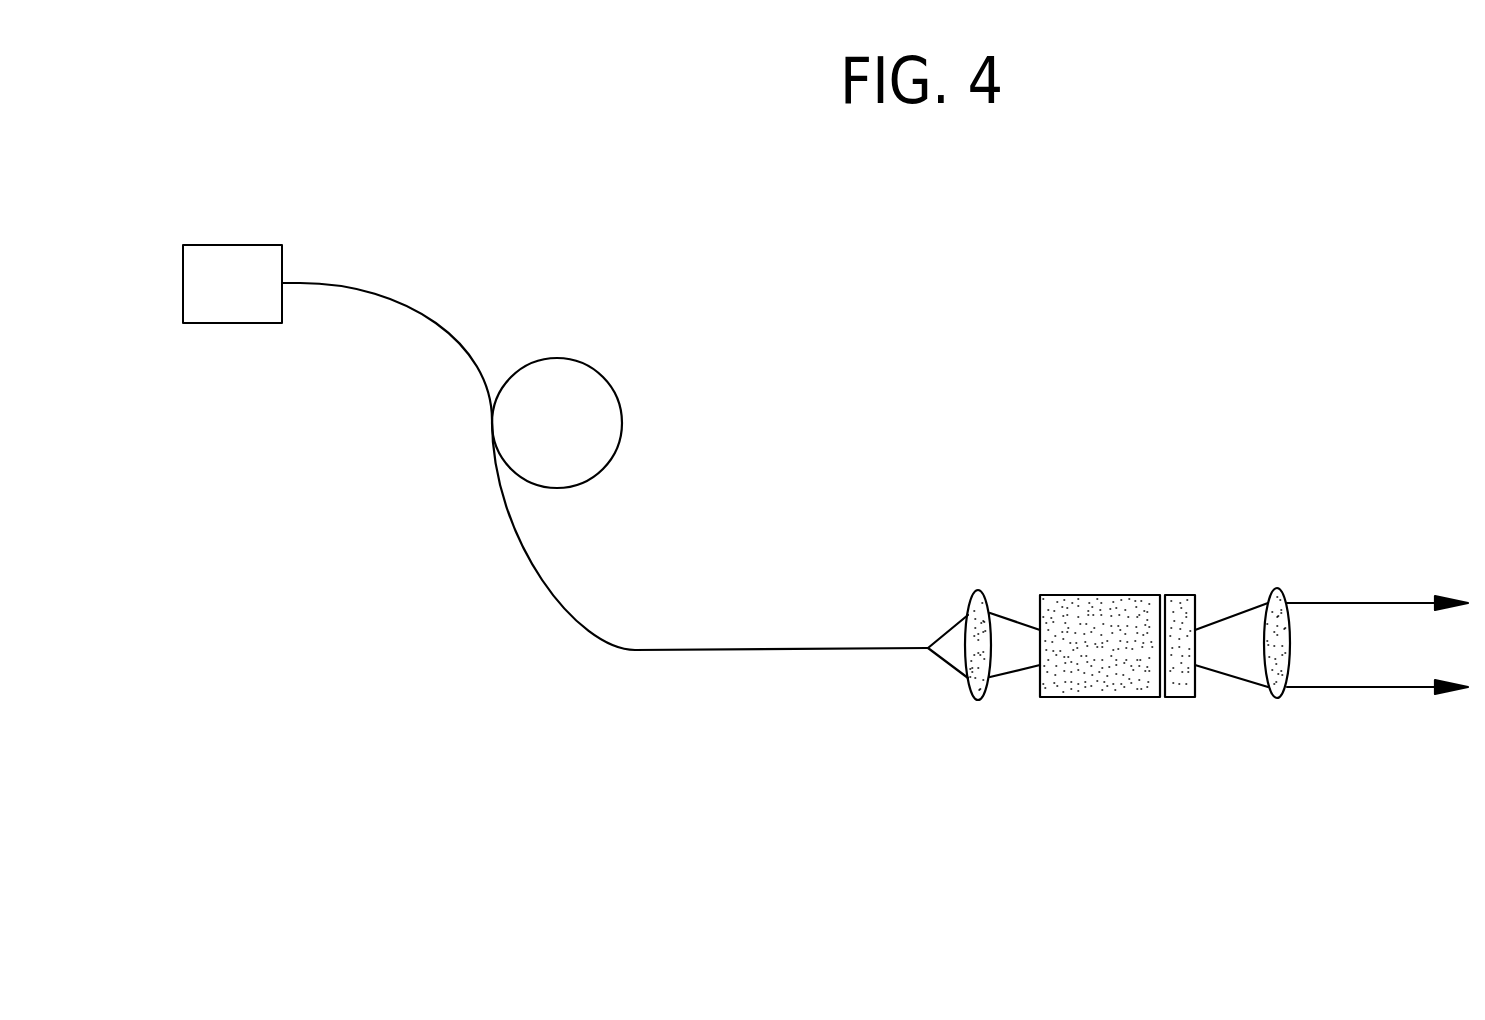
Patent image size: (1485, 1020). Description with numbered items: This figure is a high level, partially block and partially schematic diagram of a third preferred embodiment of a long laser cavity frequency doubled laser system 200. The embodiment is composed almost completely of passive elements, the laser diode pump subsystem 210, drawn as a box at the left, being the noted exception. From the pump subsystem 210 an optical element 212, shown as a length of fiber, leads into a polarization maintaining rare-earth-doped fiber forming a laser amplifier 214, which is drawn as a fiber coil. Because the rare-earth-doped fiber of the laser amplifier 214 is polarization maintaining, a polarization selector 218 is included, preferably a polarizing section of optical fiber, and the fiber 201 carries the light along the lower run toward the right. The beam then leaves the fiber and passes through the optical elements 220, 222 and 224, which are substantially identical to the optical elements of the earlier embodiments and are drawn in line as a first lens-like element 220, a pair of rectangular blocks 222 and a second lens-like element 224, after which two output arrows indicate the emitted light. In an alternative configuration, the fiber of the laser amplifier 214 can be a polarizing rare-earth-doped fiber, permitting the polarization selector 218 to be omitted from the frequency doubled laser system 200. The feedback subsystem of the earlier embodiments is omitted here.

The frequency doubled laser system 200 is at (383, 173).
The optical fiber 201 is at (494, 670).
The laser diode pump subsystem 210 is at (228, 297).
The optical element 212 is at (395, 269).
The laser amplifier 214 is at (590, 419).
The polarization selector 218 is at (816, 664).
The optical element 220 is at (987, 702).
The optical element 222 is at (1108, 698).
The optical element 224 is at (1278, 700).